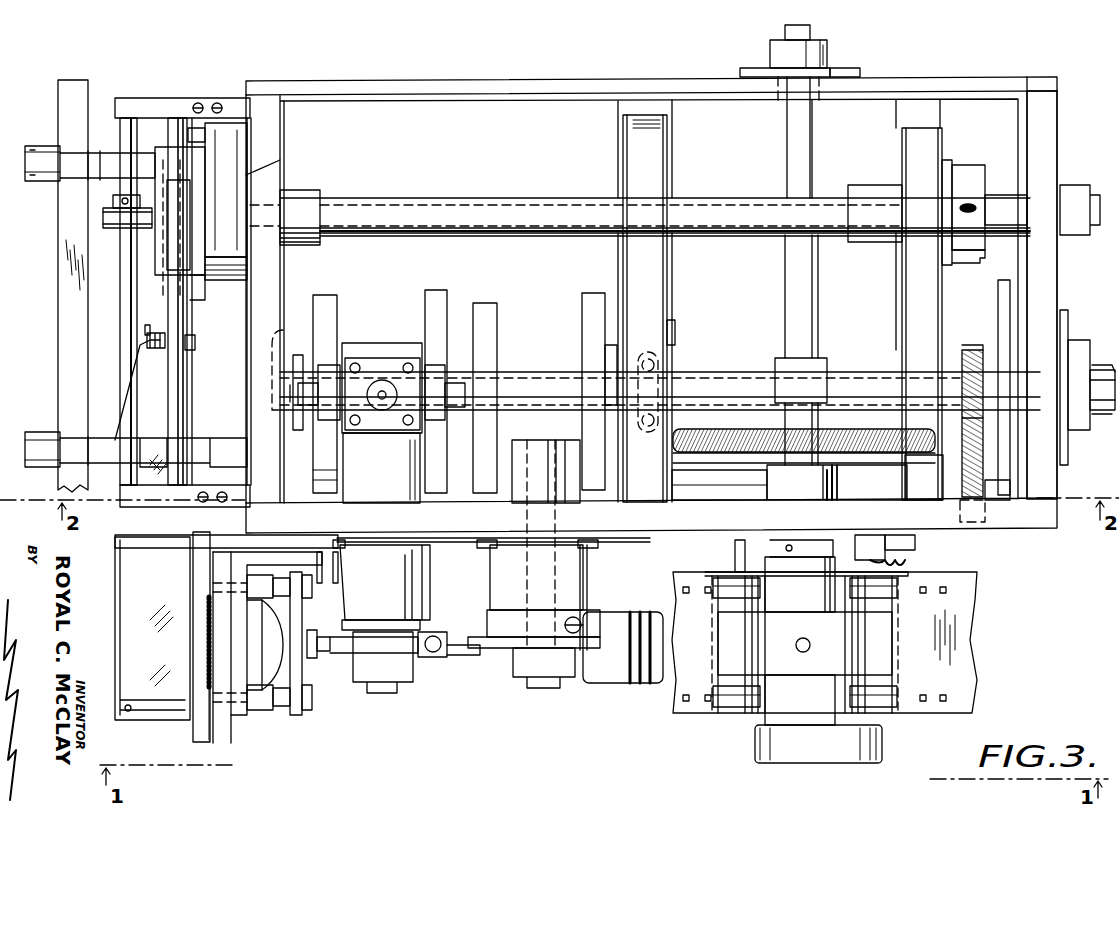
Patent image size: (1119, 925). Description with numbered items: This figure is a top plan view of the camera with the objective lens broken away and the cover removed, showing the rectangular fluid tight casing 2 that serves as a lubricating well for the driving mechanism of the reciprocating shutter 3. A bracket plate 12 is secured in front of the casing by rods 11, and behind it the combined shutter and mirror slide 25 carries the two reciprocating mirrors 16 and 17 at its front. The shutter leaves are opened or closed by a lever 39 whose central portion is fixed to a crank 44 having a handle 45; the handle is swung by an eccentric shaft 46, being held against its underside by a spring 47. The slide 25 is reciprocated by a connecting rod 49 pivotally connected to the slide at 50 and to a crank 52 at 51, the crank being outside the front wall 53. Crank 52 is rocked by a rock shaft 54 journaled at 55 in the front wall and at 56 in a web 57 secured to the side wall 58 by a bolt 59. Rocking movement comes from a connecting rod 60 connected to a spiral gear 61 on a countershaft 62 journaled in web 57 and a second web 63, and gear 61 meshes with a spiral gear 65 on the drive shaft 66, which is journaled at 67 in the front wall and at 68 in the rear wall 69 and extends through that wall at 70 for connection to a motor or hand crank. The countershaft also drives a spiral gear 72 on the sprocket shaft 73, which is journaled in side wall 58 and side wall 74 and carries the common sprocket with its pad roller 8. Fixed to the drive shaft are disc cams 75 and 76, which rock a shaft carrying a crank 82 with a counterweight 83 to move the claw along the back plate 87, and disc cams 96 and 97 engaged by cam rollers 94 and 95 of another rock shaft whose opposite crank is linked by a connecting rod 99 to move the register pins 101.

The casing 2 is at (1028, 95).
The reciprocating shutter 3 is at (195, 725).
The pad roller 8 is at (775, 712).
The rods 11 is at (105, 160).
The bracket plate 12 is at (62, 258).
The reciprocating mirror 16 is at (150, 465).
The reciprocating mirror 17 is at (140, 615).
The combined shutter and mirror slide 25 is at (192, 358).
The lever 39 is at (195, 340).
The crank 44 is at (158, 360).
The handle 45 is at (130, 330).
The eccentric shaft 46 is at (128, 285).
The spring 47 is at (152, 345).
The connecting rod 49 is at (225, 150).
The pivotal connection 50 is at (218, 268).
The pivotal connection 51 is at (190, 130).
The crank 52 is at (245, 157).
The front wall 53 is at (280, 272).
The rock shaft 54 is at (426, 203).
The journal 55 is at (295, 186).
The journal 56 is at (876, 185).
The web 57 is at (920, 128).
The side wall 58 is at (685, 515).
The bolt 59 is at (925, 545).
The connecting rod 60 is at (1005, 310).
The spiral gear 61 is at (985, 505).
The countershaft 62 is at (890, 470).
The web 63 is at (655, 272).
The spiral gear 65 is at (972, 352).
The drive shaft 66 is at (860, 378).
The journal 67 is at (283, 325).
The journal 68 is at (1068, 360).
The rear wall 69 is at (1040, 157).
The drive shaft extension 70 is at (1103, 412).
The spiral gear 72 is at (700, 430).
The sprocket shaft 73 is at (790, 300).
The side wall 74 is at (596, 82).
The disc cam 75 is at (592, 297).
The disc cam 76 is at (485, 305).
The crank 82 is at (455, 655).
The counterweight 83 is at (592, 680).
The back plate 87 is at (218, 742).
The cam roller 94 is at (327, 368).
The cam roller 95 is at (433, 365).
The disc cam 96 is at (330, 296).
The disc cam 97 is at (433, 292).
The connecting rod or link 99 is at (322, 655).
The register pins 101 is at (285, 710).